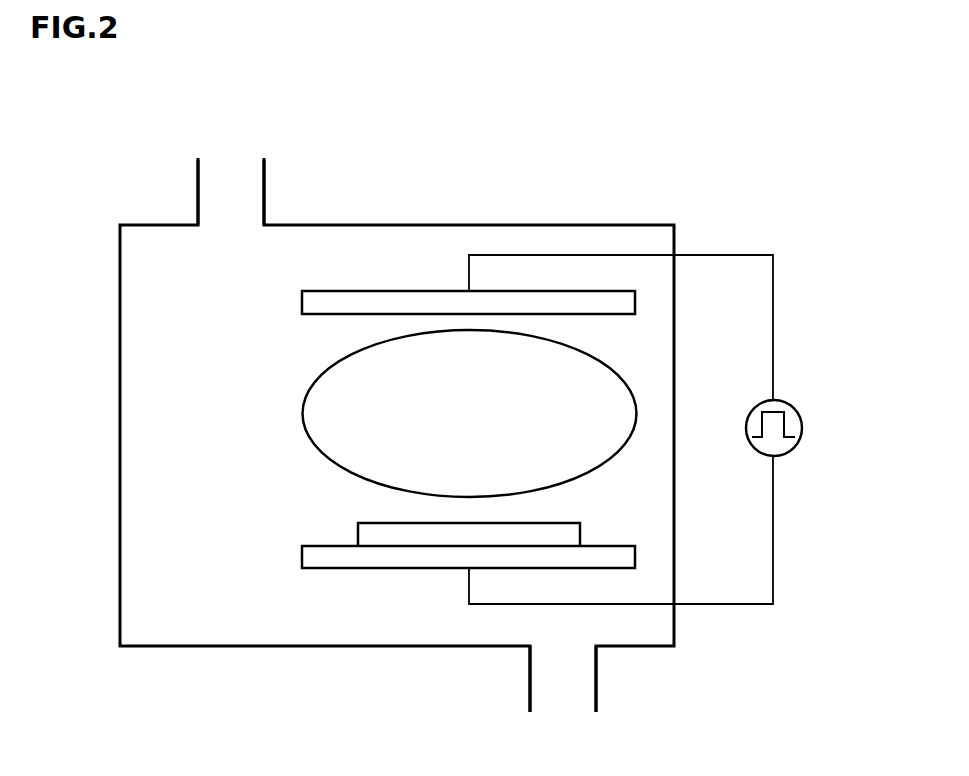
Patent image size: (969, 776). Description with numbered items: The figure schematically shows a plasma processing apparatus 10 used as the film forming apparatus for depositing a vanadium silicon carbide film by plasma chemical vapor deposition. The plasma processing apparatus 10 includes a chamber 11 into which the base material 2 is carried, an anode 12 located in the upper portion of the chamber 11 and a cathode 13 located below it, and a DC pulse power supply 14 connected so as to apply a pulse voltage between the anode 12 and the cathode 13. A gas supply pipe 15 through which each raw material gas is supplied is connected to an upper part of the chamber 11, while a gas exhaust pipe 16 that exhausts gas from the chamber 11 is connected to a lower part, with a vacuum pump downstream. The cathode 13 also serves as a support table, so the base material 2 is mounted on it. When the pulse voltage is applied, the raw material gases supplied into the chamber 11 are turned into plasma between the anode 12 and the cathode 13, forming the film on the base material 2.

The plasma processing apparatus 10 is at (151, 131).
The chamber 11 is at (434, 223).
The anode 12 is at (302, 303).
The cathode 13 is at (302, 559).
The DC pulse power supply 14 is at (797, 404).
The gas supply pipe 15 is at (198, 195).
The gas exhaust pipe 16 is at (596, 683).
The base material 2 is at (358, 530).